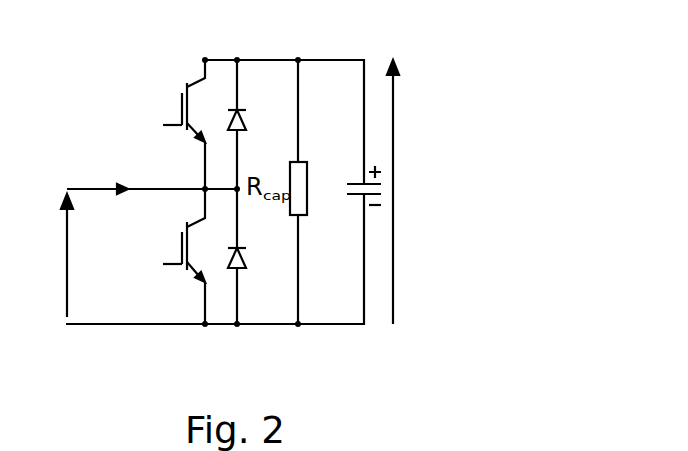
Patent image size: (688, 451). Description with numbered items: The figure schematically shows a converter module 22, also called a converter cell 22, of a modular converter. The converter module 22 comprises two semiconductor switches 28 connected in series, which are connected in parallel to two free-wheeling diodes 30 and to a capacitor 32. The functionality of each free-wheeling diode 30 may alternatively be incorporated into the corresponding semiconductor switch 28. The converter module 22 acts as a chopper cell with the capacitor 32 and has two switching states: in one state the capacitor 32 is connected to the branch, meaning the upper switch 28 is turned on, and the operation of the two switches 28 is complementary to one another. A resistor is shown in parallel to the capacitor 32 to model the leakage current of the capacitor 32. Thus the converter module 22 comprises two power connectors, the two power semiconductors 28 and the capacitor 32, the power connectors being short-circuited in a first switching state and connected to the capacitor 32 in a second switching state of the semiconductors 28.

The converter module 22 is at (469, 41).
The semiconductor switch 28 is at (177, 95).
The free-wheeling diode 30 is at (248, 112).
The capacitor 32 is at (376, 215).